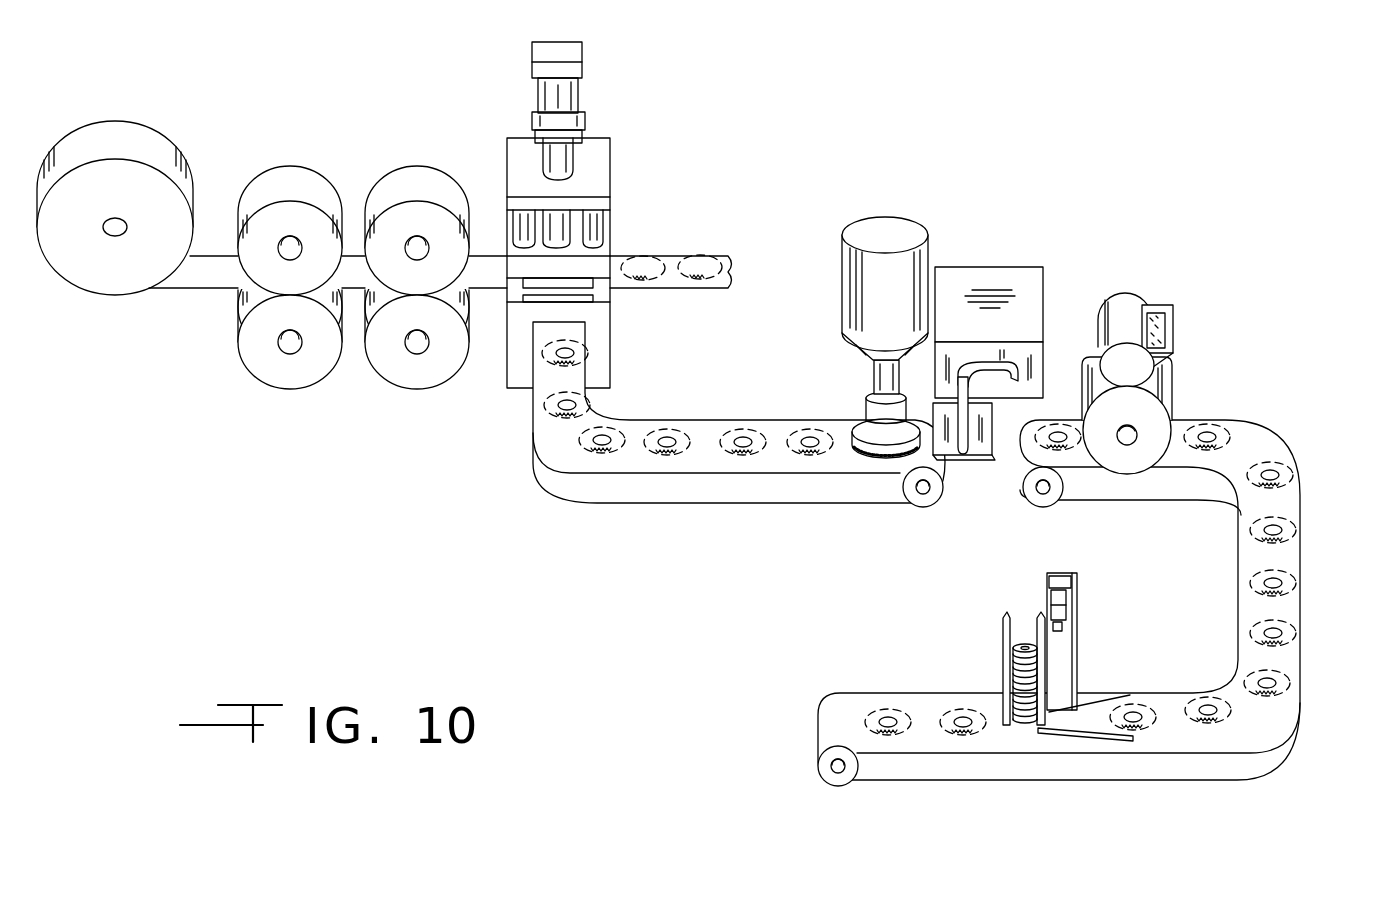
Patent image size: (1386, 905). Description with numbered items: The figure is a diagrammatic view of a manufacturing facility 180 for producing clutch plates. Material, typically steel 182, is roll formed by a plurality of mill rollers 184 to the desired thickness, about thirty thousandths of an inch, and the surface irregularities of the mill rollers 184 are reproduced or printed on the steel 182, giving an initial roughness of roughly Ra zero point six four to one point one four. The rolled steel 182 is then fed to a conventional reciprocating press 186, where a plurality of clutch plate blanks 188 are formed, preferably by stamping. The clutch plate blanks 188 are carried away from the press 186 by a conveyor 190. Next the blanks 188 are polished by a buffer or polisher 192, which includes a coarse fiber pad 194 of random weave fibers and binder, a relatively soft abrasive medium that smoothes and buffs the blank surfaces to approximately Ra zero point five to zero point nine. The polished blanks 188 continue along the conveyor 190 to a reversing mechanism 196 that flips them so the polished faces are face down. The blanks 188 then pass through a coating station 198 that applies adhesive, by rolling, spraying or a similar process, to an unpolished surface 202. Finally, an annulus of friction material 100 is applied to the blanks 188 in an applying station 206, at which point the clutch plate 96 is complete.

The manufacturing facility 180 is at (848, 136).
The steel 182 is at (132, 173).
The mill rollers 184 is at (413, 177).
The reciprocating press 186 is at (626, 235).
The clutch plate blanks 188 is at (583, 405).
The conveyor 190 is at (627, 463).
The polisher 192 is at (938, 218).
The coarse fiber pad 194 is at (860, 457).
The reversing mechanism 196 is at (1070, 271).
The coating station 198 is at (1197, 339).
The unpolished surface 202 is at (1210, 430).
The applying station 206 is at (1026, 595).
The friction material 100 is at (1018, 668).
The clutch plate 96 is at (907, 725).